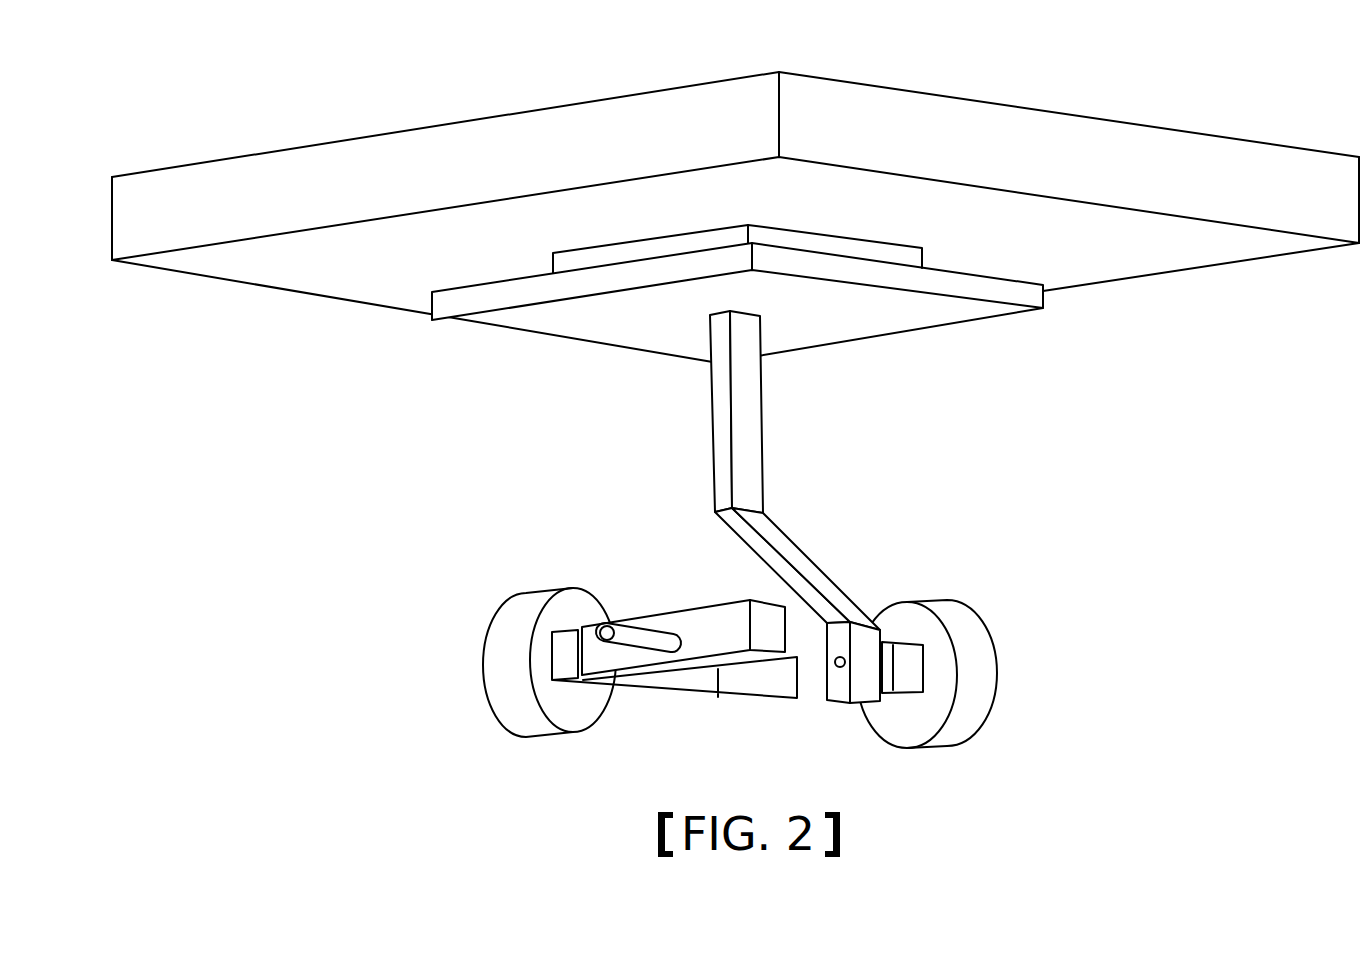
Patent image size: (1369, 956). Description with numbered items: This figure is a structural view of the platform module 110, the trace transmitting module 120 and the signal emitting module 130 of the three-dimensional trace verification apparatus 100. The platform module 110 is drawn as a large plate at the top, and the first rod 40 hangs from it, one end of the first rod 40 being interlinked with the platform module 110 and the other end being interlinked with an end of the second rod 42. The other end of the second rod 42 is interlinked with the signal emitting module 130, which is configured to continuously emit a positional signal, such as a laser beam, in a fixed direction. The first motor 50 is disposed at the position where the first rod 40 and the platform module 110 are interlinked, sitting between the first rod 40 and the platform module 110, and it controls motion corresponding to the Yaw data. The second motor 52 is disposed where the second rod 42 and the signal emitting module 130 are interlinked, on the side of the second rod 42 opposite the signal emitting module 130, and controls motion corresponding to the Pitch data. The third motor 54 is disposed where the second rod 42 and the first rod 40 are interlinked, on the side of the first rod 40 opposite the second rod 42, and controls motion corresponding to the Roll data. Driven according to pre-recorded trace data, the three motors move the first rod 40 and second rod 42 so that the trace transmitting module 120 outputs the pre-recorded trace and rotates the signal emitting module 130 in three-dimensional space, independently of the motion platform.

The three-dimensional trace verification apparatus 100 is at (172, 83).
The platform module 110 is at (920, 128).
The trace transmitting module 120 is at (877, 537).
The signal emitting module 130 is at (717, 622).
The first rod 40 is at (747, 480).
The second rod 42 is at (763, 675).
The first motor 50 is at (878, 257).
The second motor 52 is at (507, 662).
The third motor 54 is at (965, 625).